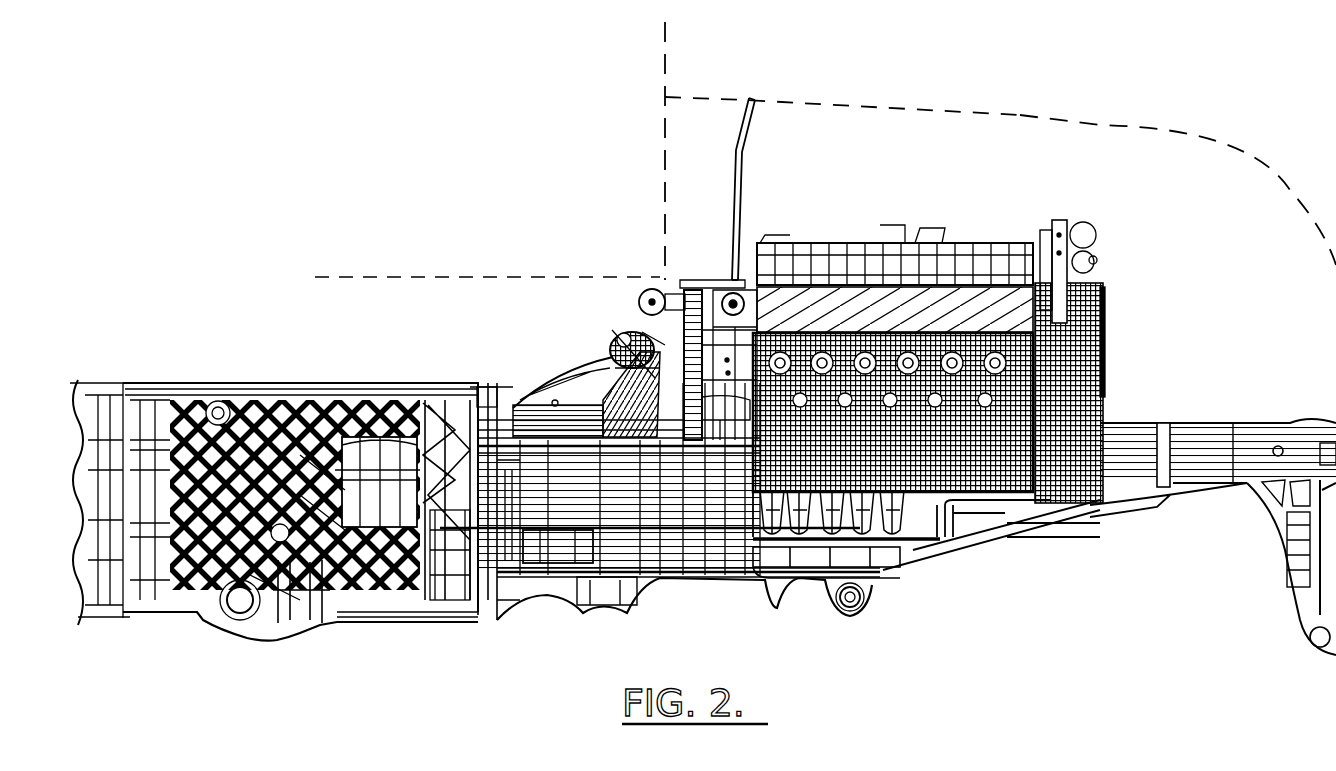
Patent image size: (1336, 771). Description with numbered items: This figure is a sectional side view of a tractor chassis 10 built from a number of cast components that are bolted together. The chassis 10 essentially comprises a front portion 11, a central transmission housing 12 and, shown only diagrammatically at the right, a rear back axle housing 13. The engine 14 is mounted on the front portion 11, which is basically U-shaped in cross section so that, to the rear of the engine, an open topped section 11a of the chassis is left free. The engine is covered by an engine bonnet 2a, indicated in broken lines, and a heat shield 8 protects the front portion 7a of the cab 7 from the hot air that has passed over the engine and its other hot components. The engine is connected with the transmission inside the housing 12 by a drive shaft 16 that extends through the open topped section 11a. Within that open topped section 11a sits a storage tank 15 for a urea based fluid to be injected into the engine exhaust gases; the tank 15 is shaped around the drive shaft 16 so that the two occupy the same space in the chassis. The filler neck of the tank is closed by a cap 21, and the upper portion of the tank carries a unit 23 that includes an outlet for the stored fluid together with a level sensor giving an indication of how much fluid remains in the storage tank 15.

The engine bonnet 2a is at (1025, 118).
The reference plane 7 is at (522, 100).
The front portion of the cab 7a is at (665, 160).
The heat shield 8 is at (738, 168).
The chassis 10 is at (717, 540).
The front portion 11 is at (895, 555).
The open topped section 11a is at (555, 402).
The central transmission housing 12 is at (300, 490).
The rear back axle housing 13 is at (100, 405).
The engine / motor unit 14 is at (885, 310).
The storage tank 15 is at (583, 473).
The drive shaft 16 is at (537, 450).
The cap 21 is at (620, 338).
The unit 23 is at (660, 355).